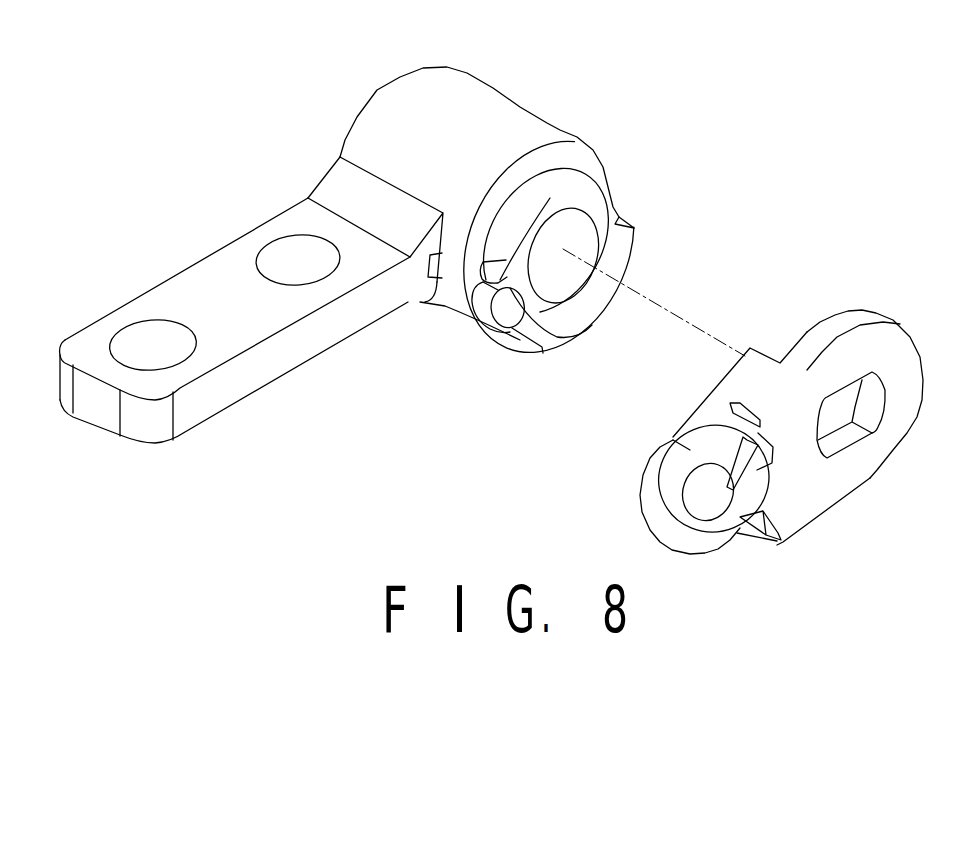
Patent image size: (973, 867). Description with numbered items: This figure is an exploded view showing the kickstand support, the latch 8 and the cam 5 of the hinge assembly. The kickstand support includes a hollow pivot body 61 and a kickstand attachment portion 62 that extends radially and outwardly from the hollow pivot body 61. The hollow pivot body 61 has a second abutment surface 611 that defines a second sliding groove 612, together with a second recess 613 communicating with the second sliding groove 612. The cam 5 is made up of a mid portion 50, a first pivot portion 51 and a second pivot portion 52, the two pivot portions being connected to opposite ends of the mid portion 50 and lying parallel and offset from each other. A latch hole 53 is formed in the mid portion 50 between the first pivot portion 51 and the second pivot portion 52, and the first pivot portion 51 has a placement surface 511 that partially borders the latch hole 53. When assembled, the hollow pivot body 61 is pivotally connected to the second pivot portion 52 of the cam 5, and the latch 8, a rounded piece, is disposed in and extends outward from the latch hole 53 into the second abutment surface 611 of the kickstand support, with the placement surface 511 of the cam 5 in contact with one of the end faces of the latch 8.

The cam 5 is at (845, 284).
The latch 8 is at (520, 302).
The mid portion 50 is at (746, 382).
The first pivot portion 51 is at (673, 518).
The second pivot portion 52 is at (893, 360).
The latch hole 53 is at (763, 447).
The hollow pivot body 61 is at (493, 118).
The kickstand attachment portion 62 is at (178, 292).
The placement surface 511 is at (740, 458).
The second abutment surface 611 is at (507, 247).
The second sliding groove 612 is at (470, 290).
The second recess 613 is at (487, 287).